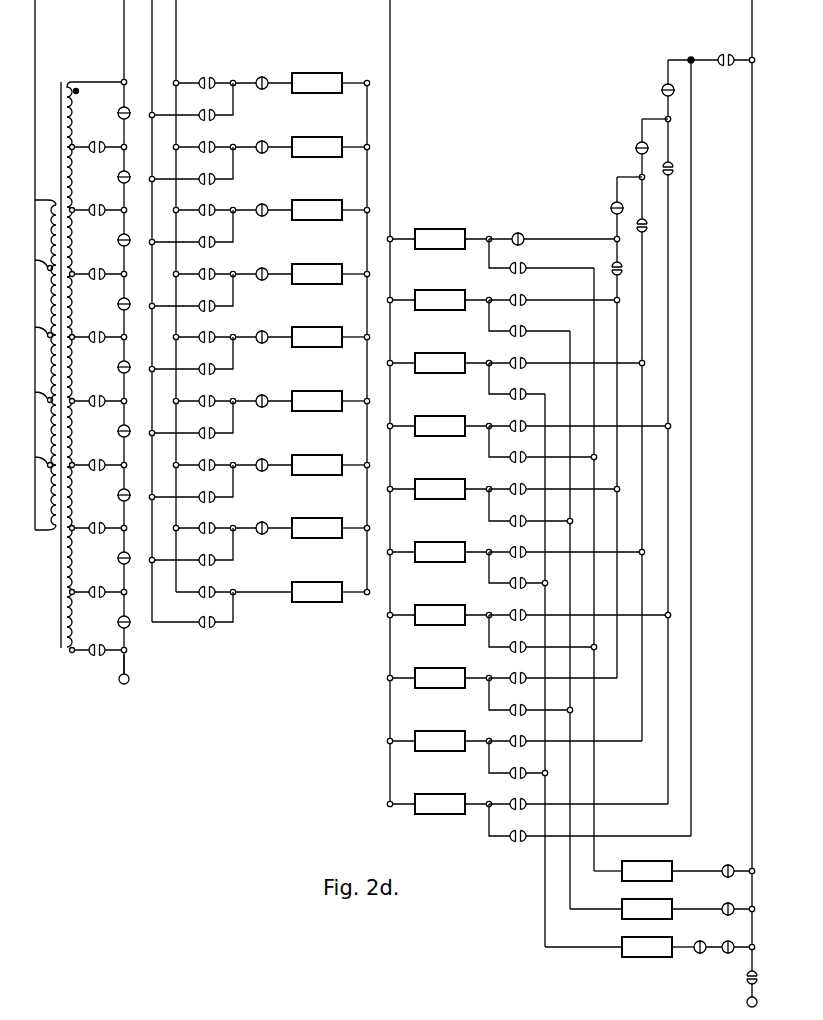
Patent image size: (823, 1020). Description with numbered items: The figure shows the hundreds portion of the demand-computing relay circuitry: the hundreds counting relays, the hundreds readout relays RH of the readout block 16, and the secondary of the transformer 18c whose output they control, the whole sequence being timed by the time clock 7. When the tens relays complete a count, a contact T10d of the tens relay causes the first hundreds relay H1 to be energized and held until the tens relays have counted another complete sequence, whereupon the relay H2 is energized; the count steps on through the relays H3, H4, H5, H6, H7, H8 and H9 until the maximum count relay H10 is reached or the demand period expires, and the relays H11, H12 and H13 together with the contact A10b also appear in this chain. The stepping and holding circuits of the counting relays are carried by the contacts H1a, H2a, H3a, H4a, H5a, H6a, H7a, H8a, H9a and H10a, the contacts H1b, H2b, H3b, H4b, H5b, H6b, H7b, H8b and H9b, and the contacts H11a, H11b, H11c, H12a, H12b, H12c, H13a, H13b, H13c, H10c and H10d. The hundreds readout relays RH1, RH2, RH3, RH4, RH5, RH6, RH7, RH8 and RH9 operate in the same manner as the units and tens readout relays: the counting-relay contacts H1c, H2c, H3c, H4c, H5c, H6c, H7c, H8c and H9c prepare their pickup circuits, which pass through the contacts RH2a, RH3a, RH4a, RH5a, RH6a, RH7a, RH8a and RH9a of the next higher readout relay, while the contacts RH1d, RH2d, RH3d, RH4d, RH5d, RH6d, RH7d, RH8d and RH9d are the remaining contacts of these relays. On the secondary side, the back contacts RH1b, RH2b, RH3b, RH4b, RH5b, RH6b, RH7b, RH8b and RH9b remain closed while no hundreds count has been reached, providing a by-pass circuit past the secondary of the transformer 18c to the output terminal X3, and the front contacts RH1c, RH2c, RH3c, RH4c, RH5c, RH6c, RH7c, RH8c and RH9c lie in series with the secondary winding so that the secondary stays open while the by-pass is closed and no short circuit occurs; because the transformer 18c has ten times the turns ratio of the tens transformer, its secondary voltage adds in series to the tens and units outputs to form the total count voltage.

The readout relays 16 is at (222, 31).
The hundreds readout relays RH is at (323, 27).
The time clock 7 is at (440, 187).
The transformer 18c is at (62, 630).
The terminal X3 is at (129, 667).
The hundreds readout relay RH1 is at (331, 83).
The hundreds readout relay RH2 is at (331, 147).
The hundreds readout relay RH3 is at (331, 210).
The hundreds readout relay RH4 is at (331, 274).
The hundreds readout relay RH5 is at (331, 337).
The hundreds readout relay RH6 is at (331, 401).
The hundreds readout relay RH7 is at (331, 465).
The hundreds readout relay RH8 is at (331, 528).
The hundreds readout relay RH9 is at (299, 592).
The contact of relay RH1 RH1b is at (117, 112).
The contact of relay RH2 RH2b is at (117, 176).
The contact of relay RH3 RH3b is at (117, 239).
The contact of relay RH4 RH4b is at (117, 303).
The contact of relay RH5 RH5b is at (117, 366).
The contact of relay RH6 RH6b is at (117, 430).
The contact of relay RH7 RH7b is at (117, 494).
The contact of relay RH8 RH8b is at (117, 557).
The contact of relay RH9 RH9b is at (117, 621).
The contact of relay RH1 RH1c is at (109, 137).
The contact of relay RH2 RH2c is at (109, 200).
The contact of relay RH3 RH3c is at (109, 264).
The contact of relay RH4 RH4c is at (109, 327).
The contact of relay RH5 RH5c is at (109, 391).
The contact of relay RH6 RH6c is at (109, 455).
The contact of relay RH7 RH7c is at (109, 518).
The contact of relay RH8 RH8c is at (109, 582).
The contact of relay RH9 RH9c is at (96, 663).
The contact of relay RH1 RH1d is at (214, 117).
The contact of relay RH2 RH2d is at (214, 181).
The contact of relay RH3 RH3d is at (214, 244).
The contact of relay RH4 RH4d is at (214, 308).
The contact of relay RH5 RH5d is at (214, 371).
The contact of relay RH6 RH6d is at (214, 435).
The contact of relay RH7 RH7d is at (214, 499).
The contact of relay RH8 RH8d is at (214, 562).
The contact of relay RH9 RH9d is at (195, 620).
The contact of relay RH2 RH2a is at (262, 76).
The contact of relay RH3 RH3a is at (266, 141).
The contact of relay RH4 RH4a is at (266, 204).
The contact of relay RH5 RH5a is at (266, 268).
The contact of relay RH6 RH6a is at (266, 331).
The contact of relay RH7 RH7a is at (266, 395).
The contact of relay RH8 RH8a is at (266, 459).
The contact of relay RH9 RH9a is at (266, 522).
The contact of relay H1 H1c is at (203, 74).
The contact of relay H2 H2c is at (215, 141).
The contact of relay H3 H3c is at (215, 204).
The contact of relay H4 H4c is at (215, 268).
The contact of relay H5 H5c is at (215, 331).
The contact of relay H6 H6c is at (215, 395).
The contact of relay H7 H7c is at (215, 459).
The contact of relay H8 H8c is at (215, 522).
The contact of relay H9 H9c is at (215, 586).
The hundreds count relay H1 is at (439, 239).
The hundreds count relay H2 is at (439, 300).
The relay H3 is at (439, 363).
The relay H4 is at (439, 426).
The relay H5 is at (439, 489).
The relay H6 is at (439, 552).
The relay H7 is at (439, 615).
The relay H8 is at (439, 678).
The relay H9 is at (439, 741).
The maximum count relay H10 is at (439, 804).
The relay H11 is at (633, 871).
The relay H12 is at (621, 909).
The relay H13 is at (608, 947).
The contact of relay H1 H1a is at (491, 266).
The contact of relay H2 H2a is at (521, 328).
The contact of relay H3 H3a is at (521, 391).
The contact of relay H4 H4a is at (484, 459).
The contact of relay H5 H5a is at (484, 524).
The contact of relay H6 H6a is at (508, 580).
The contact of relay H7 H7a is at (484, 652).
The contact of relay H8 H8a is at (484, 715).
The contact of relay H9 H9a is at (484, 778).
The contact of relay H10 H10a is at (590, 834).
The contact of relay H1 H1b is at (521, 297).
The contact of relay H2 H2b is at (521, 360).
The contact of relay H3 H3b is at (513, 420).
The contact of relay H4 H4b is at (518, 483).
The contact of relay H5 H5b is at (516, 547).
The contact of relay H6 H6b is at (517, 610).
The contact of relay H7 H7b is at (518, 673).
The contact of relay H8 H8b is at (518, 736).
The contact of relay H9 H9b is at (518, 799).
The contact of relay H11 H11a is at (548, 230).
The contact of relay H11 H11b is at (611, 267).
The contact of relay H11 H11c is at (701, 941).
The contact of relay H12 H12a is at (598, 209).
The contact of relay H12 H12b is at (636, 226).
The contact of relay H12 H12c is at (713, 862).
The contact of relay H13 H13a is at (619, 160).
The contact of relay H13 H13b is at (674, 168).
The contact of relay H13 H13c is at (713, 900).
The contact of relay H10 H10c is at (726, 954).
The contact of relay H10 H10d is at (746, 979).
The timer contact T10d is at (711, 51).
The contact A10b is at (681, 90).